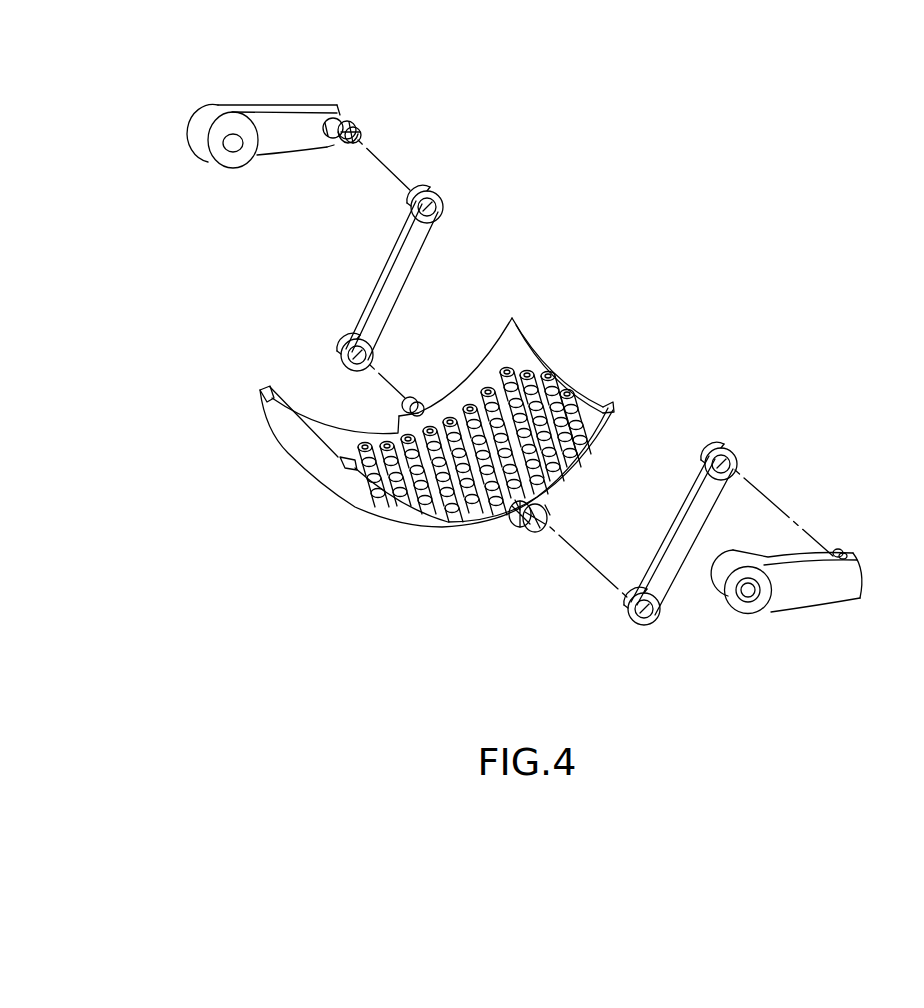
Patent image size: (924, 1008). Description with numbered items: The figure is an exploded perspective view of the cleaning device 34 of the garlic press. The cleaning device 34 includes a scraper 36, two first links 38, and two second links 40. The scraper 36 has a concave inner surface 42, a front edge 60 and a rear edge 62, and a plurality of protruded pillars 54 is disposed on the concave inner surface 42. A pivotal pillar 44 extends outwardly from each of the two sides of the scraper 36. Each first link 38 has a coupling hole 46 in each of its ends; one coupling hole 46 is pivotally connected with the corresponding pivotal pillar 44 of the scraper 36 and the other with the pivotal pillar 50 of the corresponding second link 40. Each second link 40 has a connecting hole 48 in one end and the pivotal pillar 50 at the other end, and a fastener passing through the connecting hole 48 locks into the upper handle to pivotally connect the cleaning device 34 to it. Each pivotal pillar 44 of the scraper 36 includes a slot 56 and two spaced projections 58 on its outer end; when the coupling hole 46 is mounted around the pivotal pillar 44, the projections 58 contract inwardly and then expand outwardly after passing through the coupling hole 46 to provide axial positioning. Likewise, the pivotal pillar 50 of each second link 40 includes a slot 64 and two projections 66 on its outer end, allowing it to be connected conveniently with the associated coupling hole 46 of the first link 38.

The cleaning device 34 is at (197, 503).
The scraper 36 is at (313, 467).
The first link 38 is at (403, 267).
The second link 40 is at (275, 120).
The concave inner surface 42 is at (495, 345).
The pivotal pillar 44 is at (417, 400).
The coupling hole 46 is at (443, 203).
The connecting hole 48 is at (230, 147).
The pivotal pillar 50 is at (357, 118).
The protruded pillars 54 is at (455, 515).
The slot 56 is at (398, 400).
The spaced projections 58 is at (528, 530).
The front edge 60 is at (260, 398).
The rear edge 62 is at (545, 355).
The slot 64 is at (342, 107).
The projections 66 is at (347, 153).